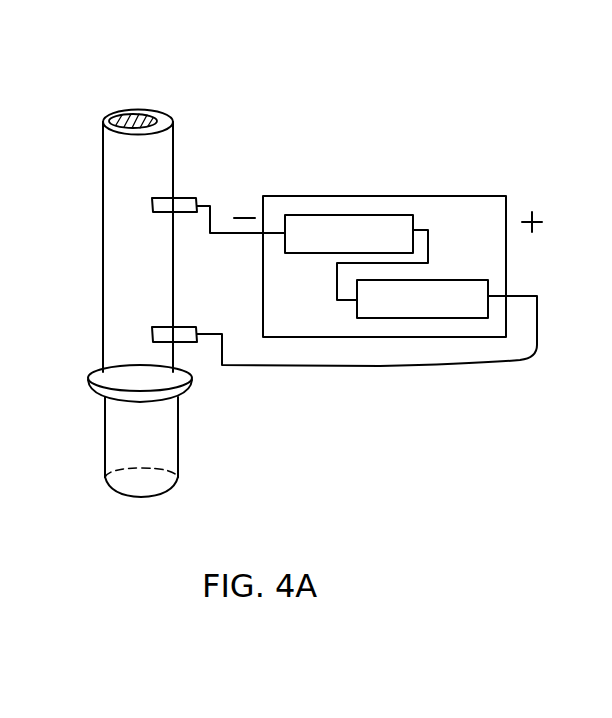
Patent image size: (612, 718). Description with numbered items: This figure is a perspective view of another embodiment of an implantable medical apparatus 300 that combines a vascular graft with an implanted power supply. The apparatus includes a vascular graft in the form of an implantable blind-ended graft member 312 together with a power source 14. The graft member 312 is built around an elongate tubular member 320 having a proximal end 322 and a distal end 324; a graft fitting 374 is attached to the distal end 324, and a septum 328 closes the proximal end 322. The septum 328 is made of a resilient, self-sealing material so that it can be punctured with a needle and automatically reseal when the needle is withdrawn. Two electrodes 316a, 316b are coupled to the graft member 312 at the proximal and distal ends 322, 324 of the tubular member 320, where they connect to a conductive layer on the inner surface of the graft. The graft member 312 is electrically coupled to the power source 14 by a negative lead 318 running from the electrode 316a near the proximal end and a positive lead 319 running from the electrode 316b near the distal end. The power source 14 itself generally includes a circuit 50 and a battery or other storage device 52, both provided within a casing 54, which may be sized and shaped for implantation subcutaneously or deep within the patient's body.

The implantable medical apparatus 300 is at (150, 88).
The blind-ended graft member 312 is at (90, 120).
The septum 328 is at (150, 118).
The proximal end 322 is at (103, 154).
The elongate tubular member 320 is at (103, 250).
The electrode 316a is at (185, 214).
The electrode 316b is at (190, 343).
The negative lead 318 is at (212, 208).
The positive lead 319 is at (308, 367).
The power source 14 is at (470, 180).
The circuit 50 is at (346, 214).
The battery 52 is at (463, 318).
The casing 54 is at (425, 340).
The distal end 324 is at (97, 365).
The graft fitting 374 is at (104, 470).